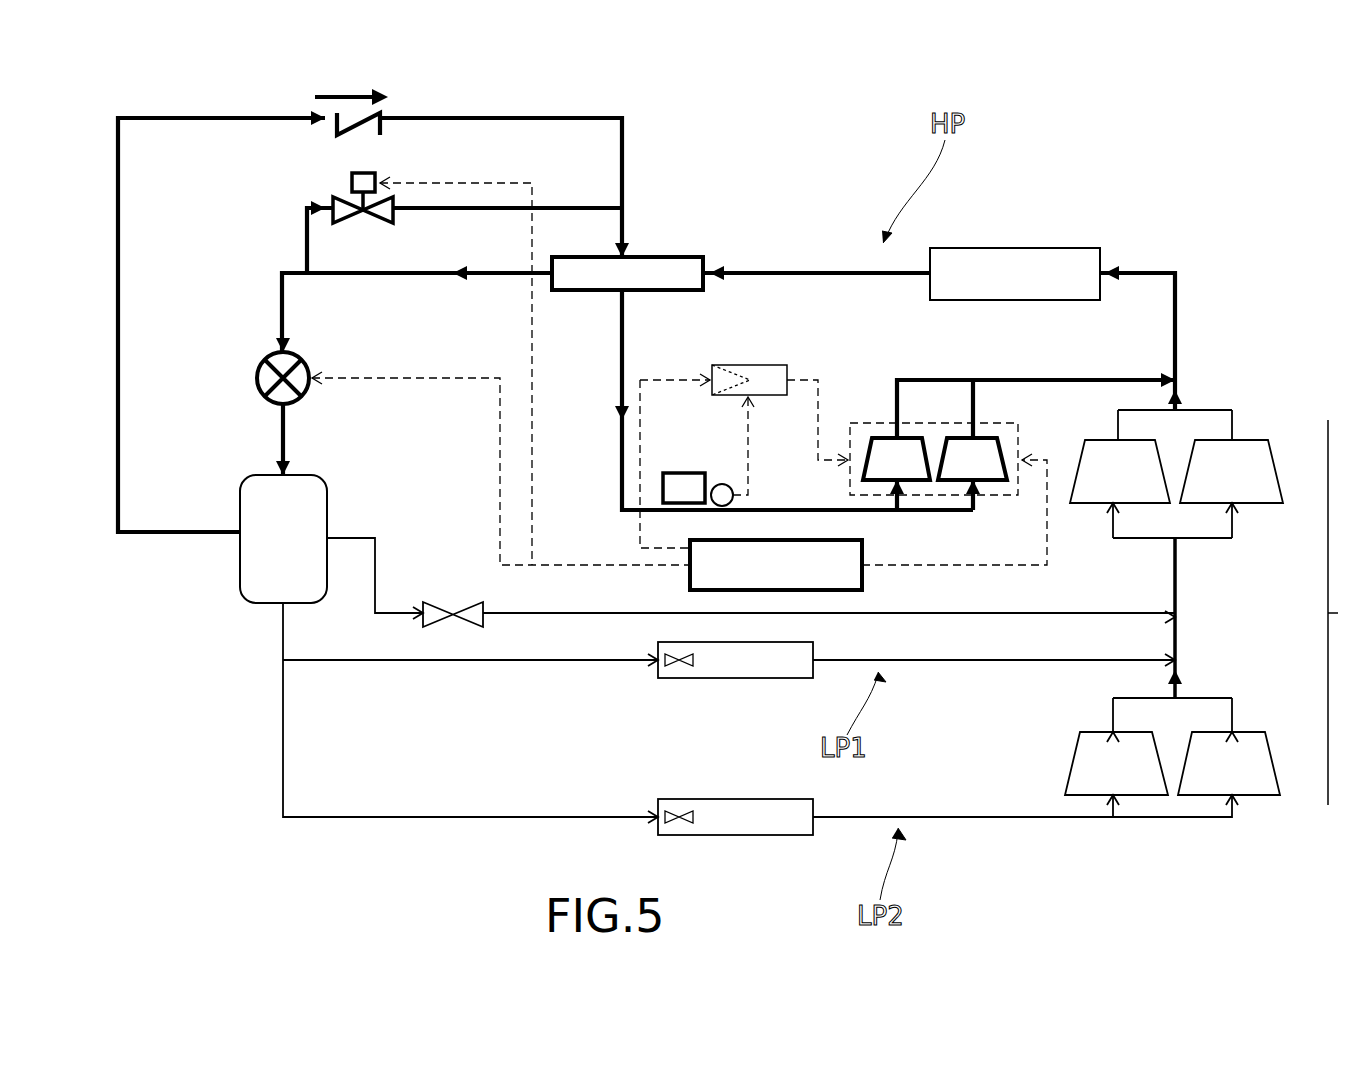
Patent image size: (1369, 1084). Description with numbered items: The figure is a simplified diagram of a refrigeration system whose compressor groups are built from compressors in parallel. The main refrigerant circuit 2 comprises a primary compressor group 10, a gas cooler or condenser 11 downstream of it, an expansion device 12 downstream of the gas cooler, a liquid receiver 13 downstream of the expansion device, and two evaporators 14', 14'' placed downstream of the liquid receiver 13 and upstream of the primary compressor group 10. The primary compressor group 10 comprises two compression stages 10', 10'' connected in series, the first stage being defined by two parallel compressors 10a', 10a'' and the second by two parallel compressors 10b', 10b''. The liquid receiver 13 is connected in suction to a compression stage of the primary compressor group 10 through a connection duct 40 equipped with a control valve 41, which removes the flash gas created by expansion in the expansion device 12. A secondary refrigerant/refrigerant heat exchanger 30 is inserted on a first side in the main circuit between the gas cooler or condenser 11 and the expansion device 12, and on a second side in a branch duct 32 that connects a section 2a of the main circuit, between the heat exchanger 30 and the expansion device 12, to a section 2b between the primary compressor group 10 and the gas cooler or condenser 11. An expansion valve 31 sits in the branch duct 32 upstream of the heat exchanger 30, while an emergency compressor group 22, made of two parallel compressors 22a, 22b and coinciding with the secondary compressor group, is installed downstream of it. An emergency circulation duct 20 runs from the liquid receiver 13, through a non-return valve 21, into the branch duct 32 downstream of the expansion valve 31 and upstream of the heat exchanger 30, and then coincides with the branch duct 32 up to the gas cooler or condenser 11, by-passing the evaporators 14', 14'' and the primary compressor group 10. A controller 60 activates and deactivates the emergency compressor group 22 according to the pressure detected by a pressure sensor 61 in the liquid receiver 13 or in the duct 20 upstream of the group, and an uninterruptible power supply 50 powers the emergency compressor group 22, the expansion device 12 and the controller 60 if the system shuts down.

The main refrigerant circuit 2 is at (808, 268).
The section of the main refrigerant circuit 2a is at (395, 273).
The section of the main refrigerant circuit 2b is at (1180, 312).
The primary compressor group 10 is at (1348, 612).
The compression stage 10' is at (1200, 698).
The compression stage 10'' is at (1217, 494).
The compressor 10a' is at (1116, 763).
The compressor 10a'' is at (1229, 763).
The compressor 10b' is at (1120, 471).
The compressor 10b'' is at (1231, 471).
The gas cooler or condenser 11 is at (1015, 274).
The expansion device 12 is at (258, 374).
The liquid receiver 13 is at (283, 539).
The evaporator 14' is at (735, 660).
The evaporator 14'' is at (735, 817).
The emergency circulation duct 20 is at (118, 232).
The non-return valve 21 is at (337, 115).
The emergency compressor group 22 is at (940, 423).
The compressor 22a is at (896, 459).
The compressor 22b is at (972, 459).
The secondary refrigerant/refrigerant heat exchanger 30 is at (627, 273).
The expansion valve 31 is at (340, 197).
The branch duct 32 is at (580, 208).
The connection duct 40 is at (1052, 617).
The control valve 41 is at (450, 604).
The uninterruptible power supply 50 is at (843, 482).
The controller 60 is at (757, 365).
The pressure sensor 61 is at (722, 483).